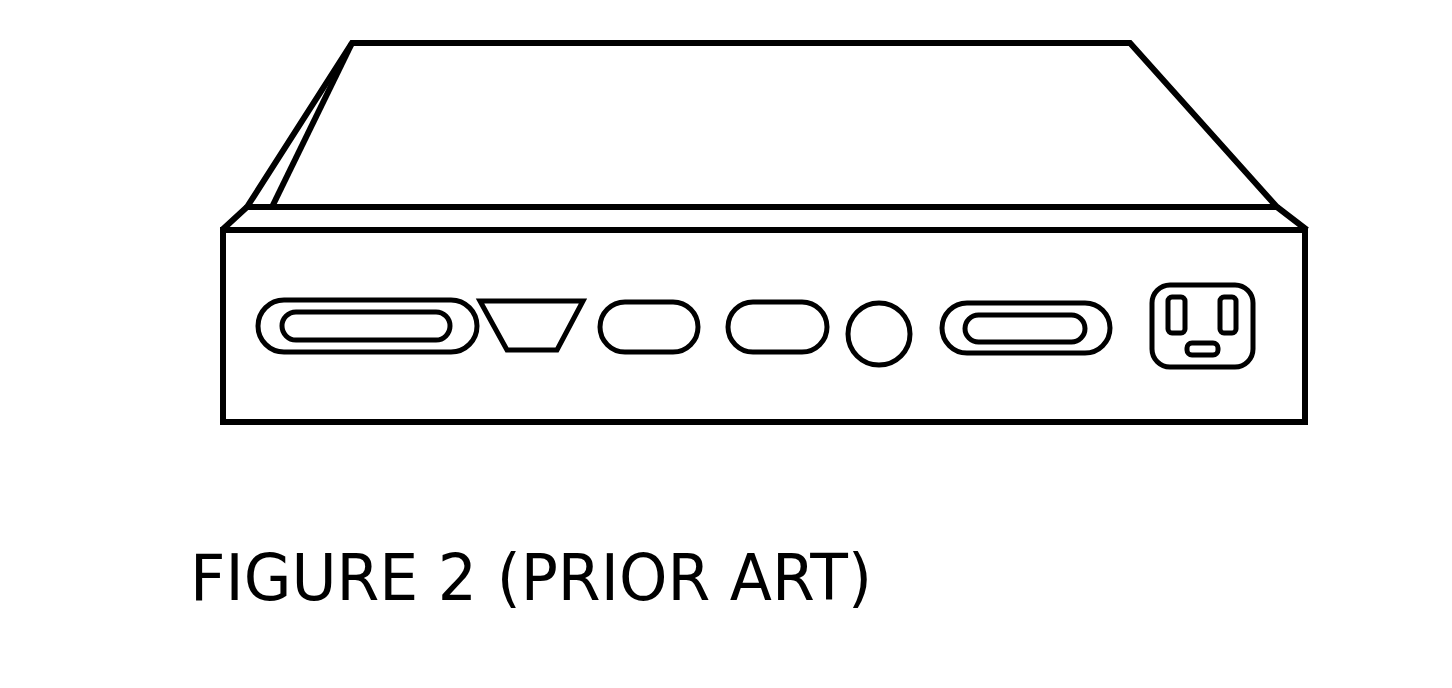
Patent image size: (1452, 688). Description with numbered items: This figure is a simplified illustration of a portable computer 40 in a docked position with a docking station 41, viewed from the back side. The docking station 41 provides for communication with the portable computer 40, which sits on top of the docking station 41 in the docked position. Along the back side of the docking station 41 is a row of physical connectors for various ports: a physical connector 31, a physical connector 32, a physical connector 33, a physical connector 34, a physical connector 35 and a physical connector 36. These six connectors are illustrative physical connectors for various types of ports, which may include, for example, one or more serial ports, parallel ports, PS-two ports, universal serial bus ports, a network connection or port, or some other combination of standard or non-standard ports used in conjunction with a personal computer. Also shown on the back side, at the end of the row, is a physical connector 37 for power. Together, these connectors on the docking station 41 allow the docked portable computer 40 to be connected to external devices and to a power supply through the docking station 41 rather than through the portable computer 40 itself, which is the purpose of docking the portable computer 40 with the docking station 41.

The physical connector 31 is at (360, 352).
The physical connector 32 is at (527, 350).
The physical connector 33 is at (643, 352).
The physical connector 34 is at (783, 352).
The physical connector 35 is at (900, 358).
The physical connector 36 is at (1020, 353).
The physical connector for power 37 is at (1183, 367).
The portable computer 40 is at (1145, 118).
The docking station 41 is at (1310, 388).